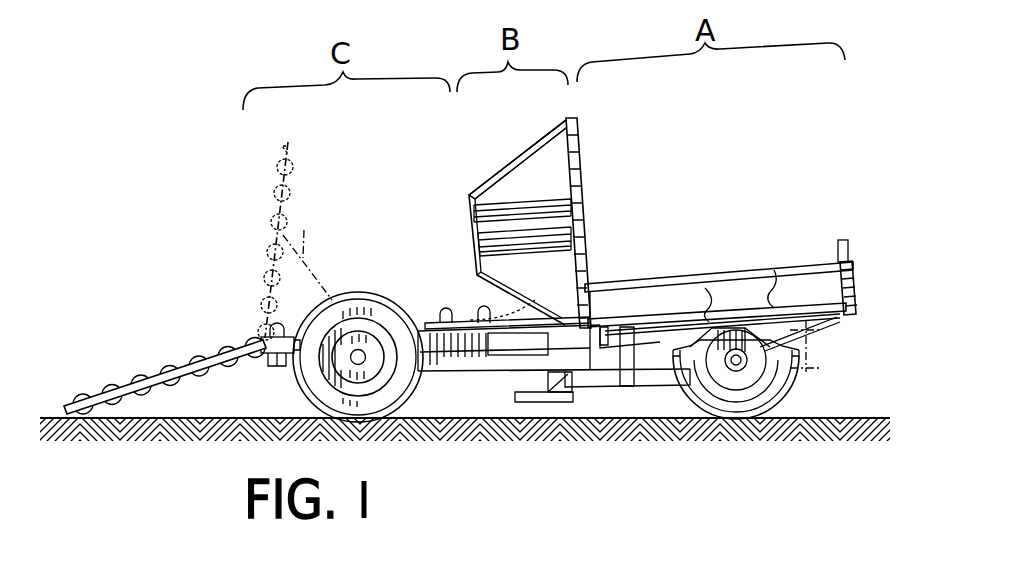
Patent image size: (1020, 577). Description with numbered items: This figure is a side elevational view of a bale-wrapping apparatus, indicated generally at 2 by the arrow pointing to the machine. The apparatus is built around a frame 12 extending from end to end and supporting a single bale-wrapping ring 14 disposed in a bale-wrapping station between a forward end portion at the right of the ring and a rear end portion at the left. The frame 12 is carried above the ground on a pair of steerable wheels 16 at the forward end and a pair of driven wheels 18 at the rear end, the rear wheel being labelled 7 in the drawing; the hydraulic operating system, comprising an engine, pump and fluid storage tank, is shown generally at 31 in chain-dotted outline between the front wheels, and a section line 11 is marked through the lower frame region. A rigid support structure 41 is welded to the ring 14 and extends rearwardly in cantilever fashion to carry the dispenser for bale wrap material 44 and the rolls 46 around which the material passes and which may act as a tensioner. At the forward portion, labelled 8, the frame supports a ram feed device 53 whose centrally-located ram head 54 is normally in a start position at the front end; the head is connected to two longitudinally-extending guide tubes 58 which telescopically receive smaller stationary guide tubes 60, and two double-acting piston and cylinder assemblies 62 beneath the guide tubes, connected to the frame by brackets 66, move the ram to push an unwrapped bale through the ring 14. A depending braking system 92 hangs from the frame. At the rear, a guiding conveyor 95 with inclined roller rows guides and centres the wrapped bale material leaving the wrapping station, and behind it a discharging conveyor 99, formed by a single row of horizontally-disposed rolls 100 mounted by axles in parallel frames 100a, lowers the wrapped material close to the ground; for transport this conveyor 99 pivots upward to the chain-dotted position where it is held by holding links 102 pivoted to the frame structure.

The spreading apparatus 2 is at (462, 208).
The front wheel 7 is at (355, 292).
The bed frame 8 is at (766, 248).
The section line 11 is at (425, 466).
The frame 12 is at (607, 396).
The bale-wrapping ring 14 is at (590, 160).
The steerable wheels 16 is at (789, 388).
The driven wheels 18 is at (318, 384).
The hydraulic operating system 31 is at (820, 346).
The support structure 41 is at (532, 142).
The bale wrap material 44 is at (556, 238).
The rolls 46 is at (548, 200).
The ram feed device 53 is at (856, 254).
The ram head 54 is at (842, 240).
The guide tubes 58 is at (705, 288).
The guide tubes 60 is at (550, 335).
The double-acting piston and cylinder assemblies 62 is at (774, 270).
The bracket 66 is at (634, 392).
The braking system 92 is at (566, 406).
The guiding conveyor 95 is at (478, 302).
The discharging conveyor 99 is at (268, 190).
The rolls 100 is at (140, 383).
The parallel frames 100a is at (188, 392).
The holding links 102 is at (304, 230).